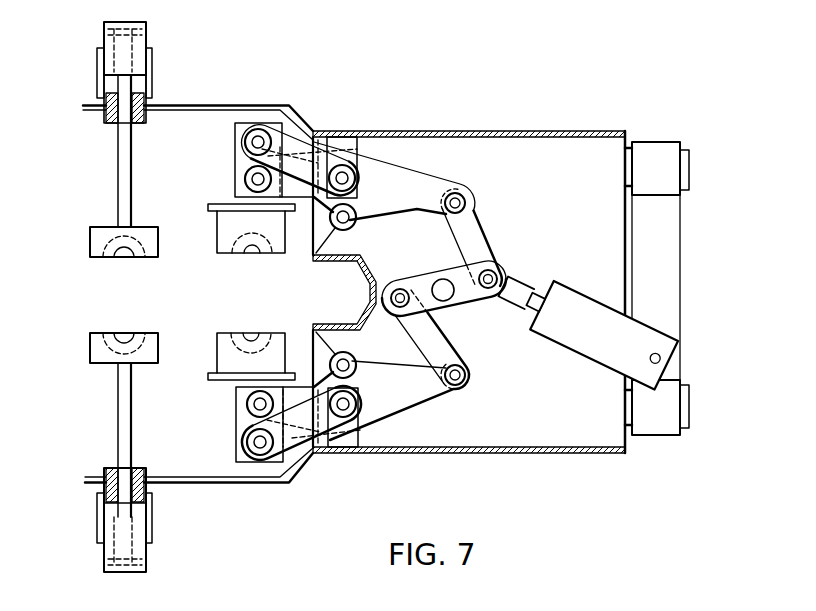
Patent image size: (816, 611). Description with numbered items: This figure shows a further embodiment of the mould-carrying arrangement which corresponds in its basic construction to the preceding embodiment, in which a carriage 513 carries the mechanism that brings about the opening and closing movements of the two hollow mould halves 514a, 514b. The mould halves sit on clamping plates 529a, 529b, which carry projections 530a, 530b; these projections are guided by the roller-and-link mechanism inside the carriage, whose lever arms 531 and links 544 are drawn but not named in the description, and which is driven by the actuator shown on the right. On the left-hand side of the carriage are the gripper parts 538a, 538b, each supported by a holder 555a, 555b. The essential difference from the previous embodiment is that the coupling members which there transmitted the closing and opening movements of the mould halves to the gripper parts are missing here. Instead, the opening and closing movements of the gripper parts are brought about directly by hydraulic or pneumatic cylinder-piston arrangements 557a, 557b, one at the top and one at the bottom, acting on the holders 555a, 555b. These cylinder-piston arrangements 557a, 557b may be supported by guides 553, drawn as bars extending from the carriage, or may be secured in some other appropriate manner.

The housing 513 is at (512, 114).
The lower bearing block 514a is at (224, 338).
The upper bearing block 514b is at (219, 250).
The lower mounting plate 529a is at (226, 381).
The upper mounting plate 529b is at (228, 208).
The lower roller bracket 530a is at (262, 464).
The upper roller bracket 530b is at (280, 122).
The lever arm 531 is at (397, 175).
The lower bearing support 538a is at (100, 334).
The upper bearing support 538b is at (98, 258).
The roller link 544 is at (278, 140).
The guides 553 is at (217, 104).
The lower rod 555a is at (122, 447).
The upper rod 555b is at (118, 166).
The cylinder-piston arrangements 557a is at (145, 553).
The cylinder-piston arrangements 557b is at (138, 41).